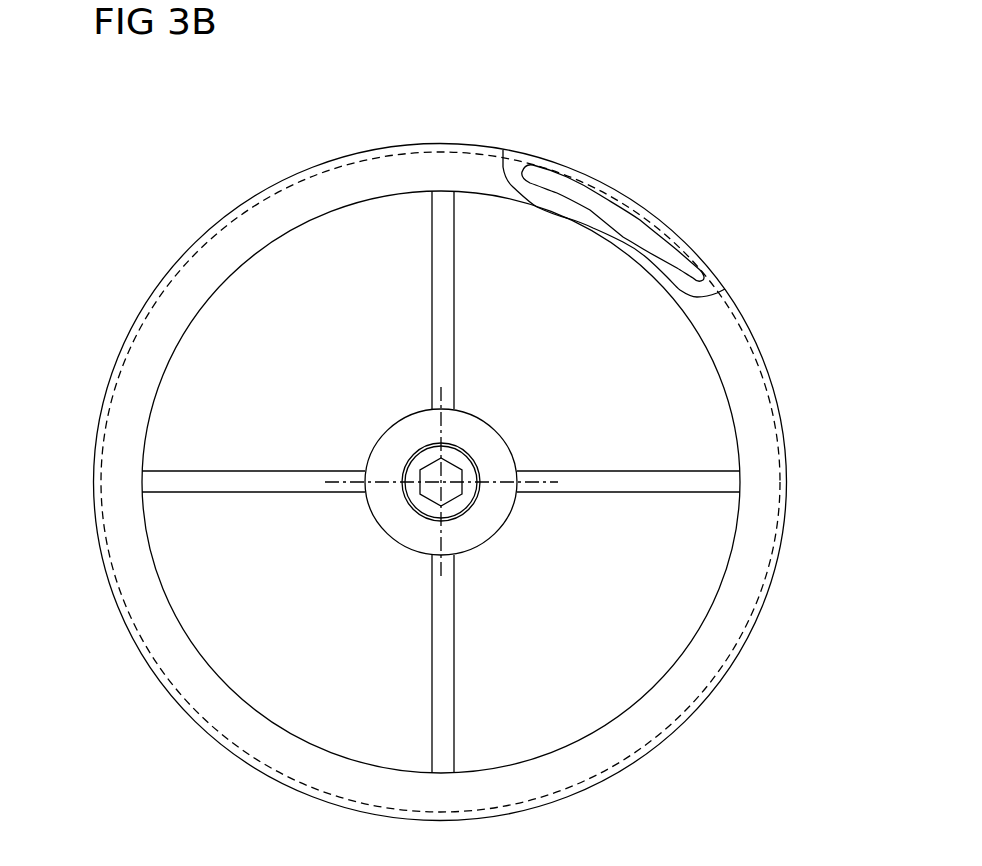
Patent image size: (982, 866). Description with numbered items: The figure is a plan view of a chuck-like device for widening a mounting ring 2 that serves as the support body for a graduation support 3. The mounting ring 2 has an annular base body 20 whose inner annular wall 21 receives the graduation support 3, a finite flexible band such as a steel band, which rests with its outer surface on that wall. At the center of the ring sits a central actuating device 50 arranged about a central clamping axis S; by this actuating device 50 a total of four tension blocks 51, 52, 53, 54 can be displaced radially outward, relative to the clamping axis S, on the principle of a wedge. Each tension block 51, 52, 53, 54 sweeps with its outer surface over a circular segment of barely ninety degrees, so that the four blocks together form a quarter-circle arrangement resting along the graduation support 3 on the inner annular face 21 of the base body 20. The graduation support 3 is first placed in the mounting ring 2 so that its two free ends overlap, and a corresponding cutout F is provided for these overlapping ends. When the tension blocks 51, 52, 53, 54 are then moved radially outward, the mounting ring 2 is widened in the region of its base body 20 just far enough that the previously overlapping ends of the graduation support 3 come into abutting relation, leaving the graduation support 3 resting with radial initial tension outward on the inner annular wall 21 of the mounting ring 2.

The mounting ring 2 is at (290, 172).
The graduation support 3 is at (153, 320).
The annular base body 20 is at (348, 155).
The inner annular wall 21 is at (243, 210).
The cutout F is at (637, 217).
The central actuating device 50 is at (458, 458).
The central clamping axis S is at (440, 482).
The tension block 51 is at (670, 368).
The tension block 52 is at (593, 692).
The tension block 53 is at (252, 682).
The tension block 54 is at (247, 307).